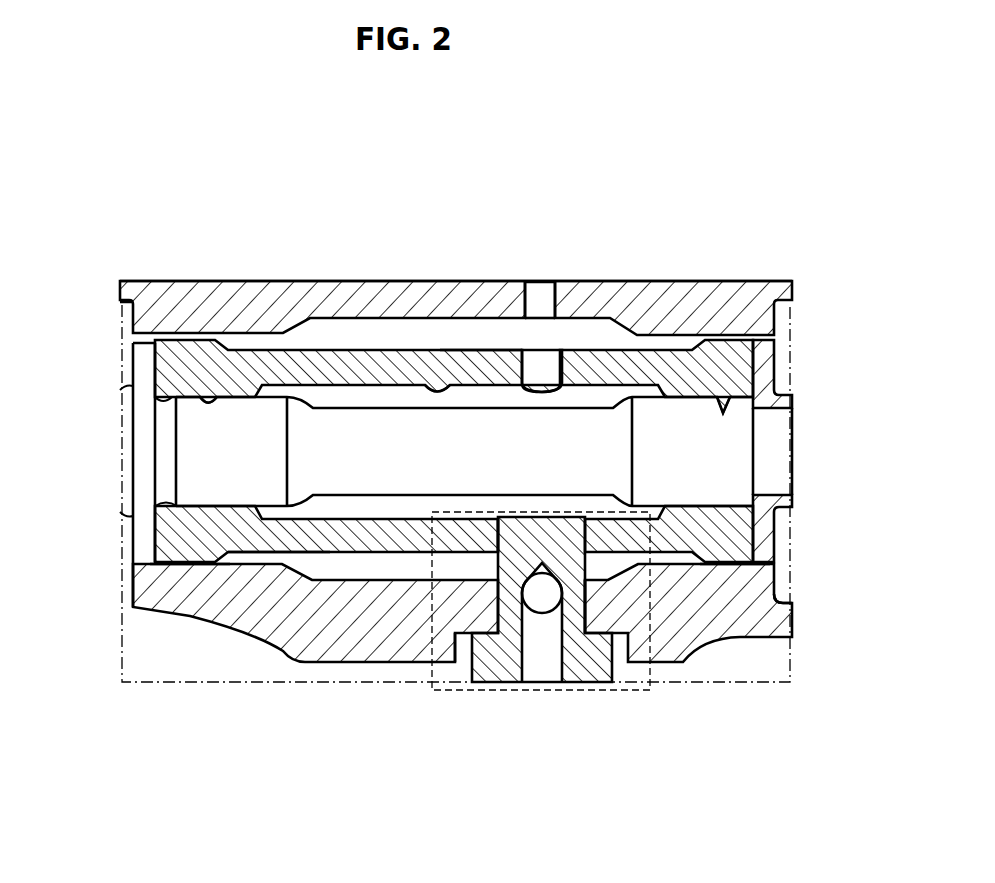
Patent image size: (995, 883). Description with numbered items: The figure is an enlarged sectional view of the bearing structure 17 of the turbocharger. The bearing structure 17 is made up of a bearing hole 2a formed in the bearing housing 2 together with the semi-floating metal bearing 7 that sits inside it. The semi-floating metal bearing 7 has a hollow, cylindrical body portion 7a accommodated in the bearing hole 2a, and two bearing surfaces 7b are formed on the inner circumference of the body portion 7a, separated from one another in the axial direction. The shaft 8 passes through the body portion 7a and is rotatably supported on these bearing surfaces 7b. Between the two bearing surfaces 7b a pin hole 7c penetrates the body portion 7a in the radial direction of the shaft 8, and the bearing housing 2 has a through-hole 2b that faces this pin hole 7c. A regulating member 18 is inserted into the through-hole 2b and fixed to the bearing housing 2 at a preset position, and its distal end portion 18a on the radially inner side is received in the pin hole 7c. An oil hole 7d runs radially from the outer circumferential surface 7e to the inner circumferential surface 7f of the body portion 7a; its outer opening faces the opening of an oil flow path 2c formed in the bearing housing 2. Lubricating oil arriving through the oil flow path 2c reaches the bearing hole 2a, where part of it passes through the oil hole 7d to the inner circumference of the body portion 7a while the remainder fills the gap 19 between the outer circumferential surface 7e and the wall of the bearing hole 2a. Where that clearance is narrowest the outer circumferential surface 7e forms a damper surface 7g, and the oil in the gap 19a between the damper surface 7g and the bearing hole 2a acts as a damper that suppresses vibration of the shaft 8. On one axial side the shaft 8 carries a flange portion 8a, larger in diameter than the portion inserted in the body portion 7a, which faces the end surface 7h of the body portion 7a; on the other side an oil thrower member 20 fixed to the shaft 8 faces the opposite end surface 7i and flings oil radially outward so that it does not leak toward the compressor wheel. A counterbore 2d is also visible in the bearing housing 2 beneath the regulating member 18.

The bearing housing 2 is at (454, 451).
The bearing hole 2a is at (282, 563).
The through-hole 2b is at (501, 612).
The oil flow path 2c is at (556, 298).
The counterbore 2d is at (465, 636).
The semi-floating metal bearing 7 is at (456, 529).
The body portion 7a is at (400, 582).
The bearing surfaces 7b is at (202, 397).
The pin hole 7c is at (590, 560).
The oil hole 7d is at (560, 366).
The outer circumferential surface 7e is at (482, 350).
The inner circumferential surface 7f is at (423, 383).
The damper surface 7g is at (190, 565).
The end surface 7h is at (133, 564).
The end surface 7i is at (800, 605).
The shaft 8 is at (357, 495).
The flange portion 8a is at (133, 543).
The bearing structure 17 is at (128, 262).
The regulating member 18 is at (577, 682).
The distal end portion 18a is at (600, 570).
The gap 19 is at (364, 324).
The gap 19a is at (236, 342).
The oil thrower member 20 is at (790, 540).